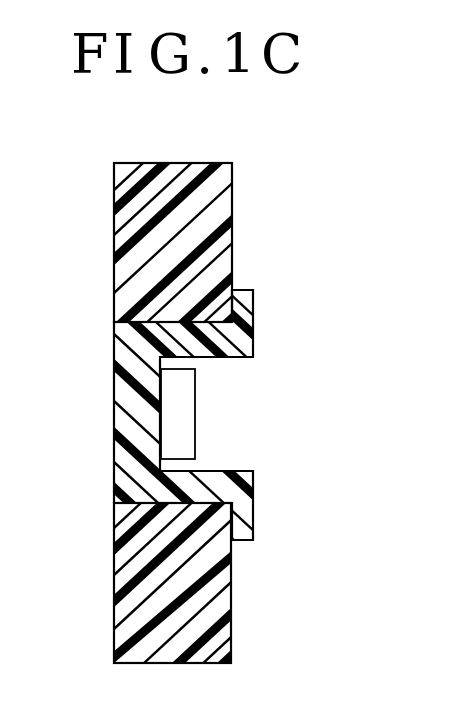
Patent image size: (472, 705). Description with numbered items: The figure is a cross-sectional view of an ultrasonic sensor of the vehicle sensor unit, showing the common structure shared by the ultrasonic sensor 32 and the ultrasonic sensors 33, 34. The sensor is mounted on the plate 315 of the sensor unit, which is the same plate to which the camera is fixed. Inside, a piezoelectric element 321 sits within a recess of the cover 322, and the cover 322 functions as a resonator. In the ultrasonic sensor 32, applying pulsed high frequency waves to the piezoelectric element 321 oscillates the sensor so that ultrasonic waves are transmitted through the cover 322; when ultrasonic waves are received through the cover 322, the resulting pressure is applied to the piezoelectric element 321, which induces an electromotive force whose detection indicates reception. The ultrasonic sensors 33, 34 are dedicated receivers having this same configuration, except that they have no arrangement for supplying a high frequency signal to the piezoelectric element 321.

The ultrasonic sensor 32 is at (217, 375).
The ultrasonic sensor 33 is at (217, 375).
The ultrasonic sensor 34 is at (371, 132).
The plate 315 is at (226, 247).
The piezoelectric element 321 is at (183, 428).
The cover 322 is at (115, 372).